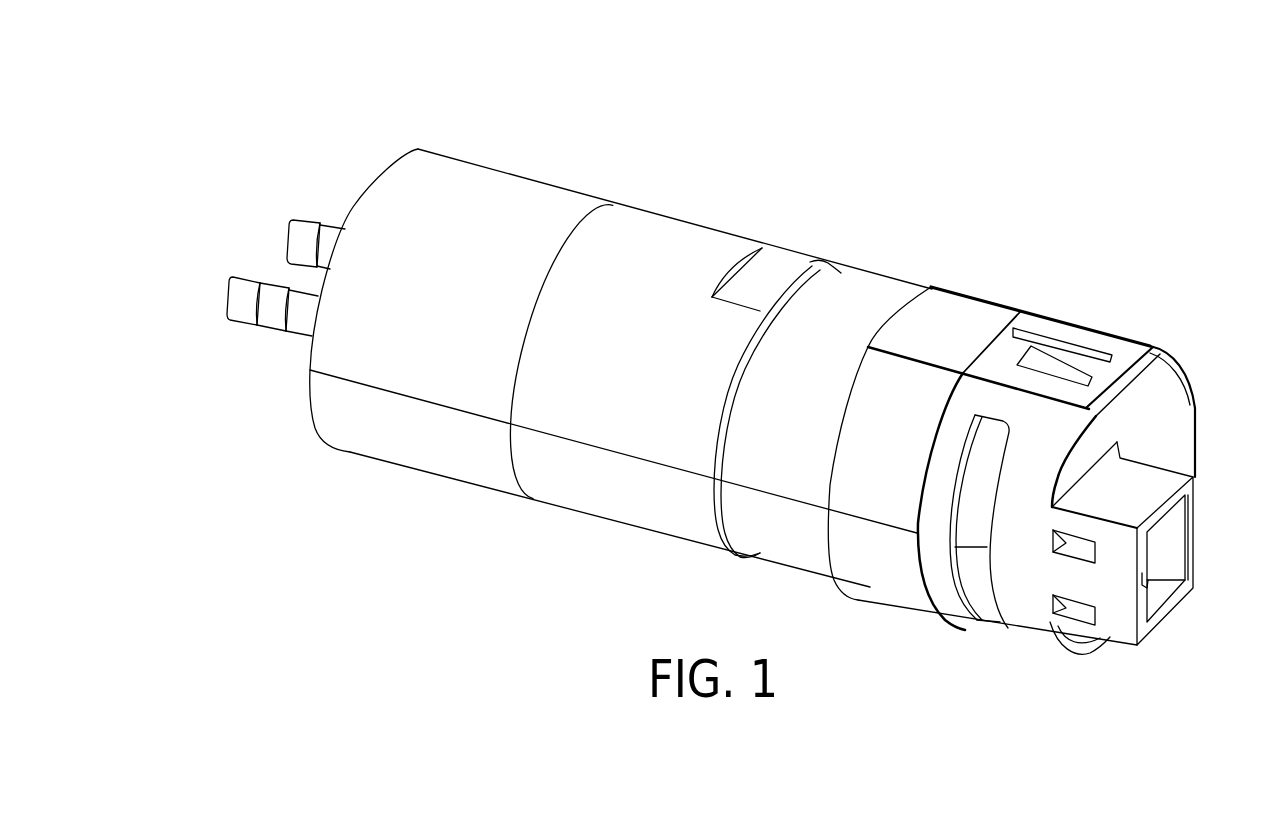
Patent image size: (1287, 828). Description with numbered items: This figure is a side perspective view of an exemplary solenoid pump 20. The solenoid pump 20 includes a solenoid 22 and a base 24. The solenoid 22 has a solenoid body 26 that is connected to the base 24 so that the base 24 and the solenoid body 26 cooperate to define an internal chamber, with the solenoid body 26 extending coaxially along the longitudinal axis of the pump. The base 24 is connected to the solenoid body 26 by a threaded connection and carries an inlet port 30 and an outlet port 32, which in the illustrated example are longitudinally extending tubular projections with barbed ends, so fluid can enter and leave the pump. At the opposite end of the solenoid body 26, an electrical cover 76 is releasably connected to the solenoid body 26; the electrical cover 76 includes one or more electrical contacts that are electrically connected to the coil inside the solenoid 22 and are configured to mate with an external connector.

The solenoid pump 20 is at (828, 133).
The solenoid 22 is at (1196, 328).
The base 24 is at (633, 173).
The solenoid body 26 is at (790, 468).
The inlet port 30 is at (302, 238).
The outlet port 32 is at (242, 293).
The electrical cover 76 is at (1168, 410).